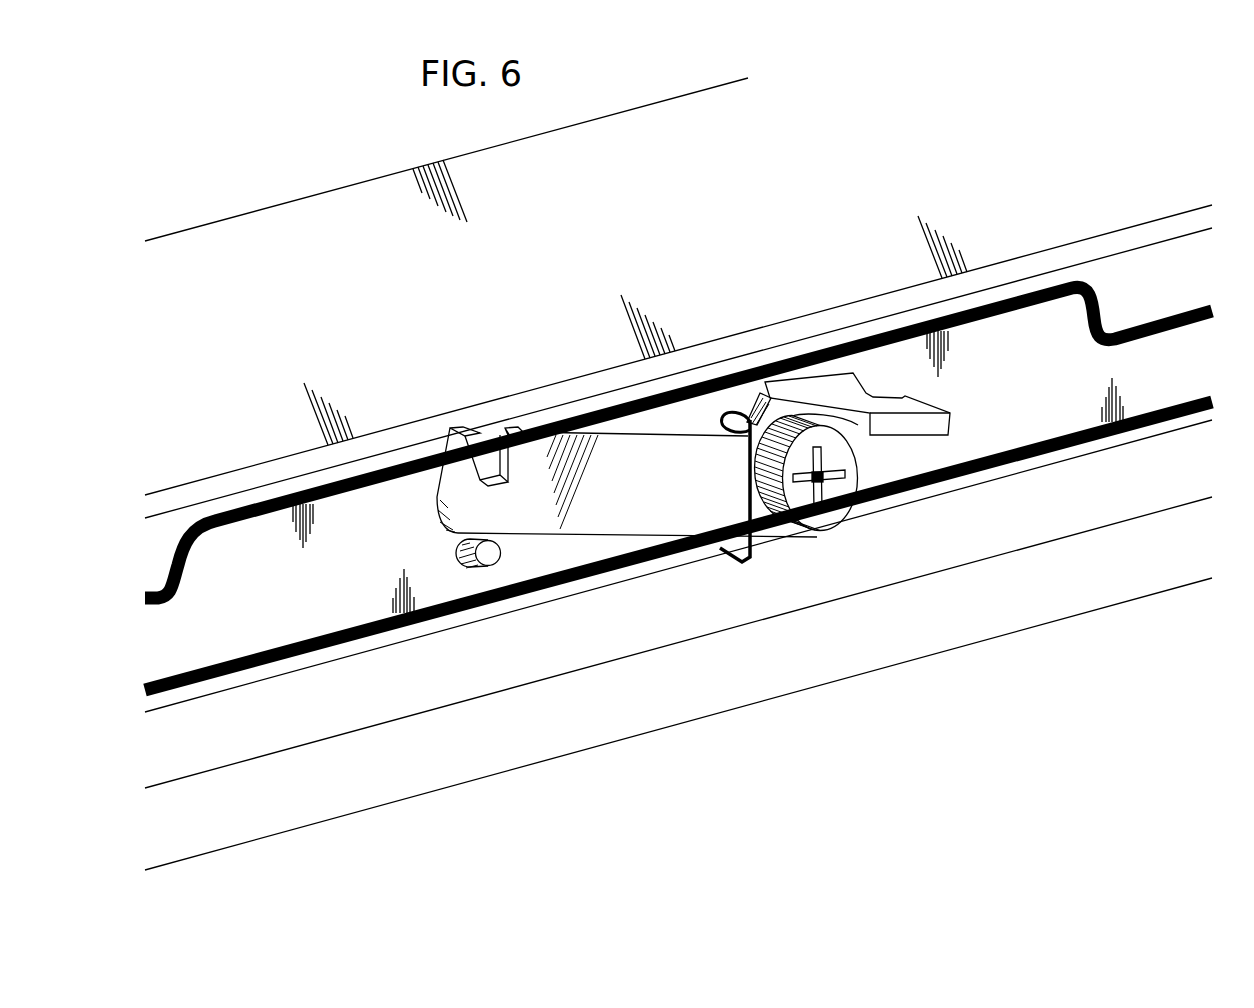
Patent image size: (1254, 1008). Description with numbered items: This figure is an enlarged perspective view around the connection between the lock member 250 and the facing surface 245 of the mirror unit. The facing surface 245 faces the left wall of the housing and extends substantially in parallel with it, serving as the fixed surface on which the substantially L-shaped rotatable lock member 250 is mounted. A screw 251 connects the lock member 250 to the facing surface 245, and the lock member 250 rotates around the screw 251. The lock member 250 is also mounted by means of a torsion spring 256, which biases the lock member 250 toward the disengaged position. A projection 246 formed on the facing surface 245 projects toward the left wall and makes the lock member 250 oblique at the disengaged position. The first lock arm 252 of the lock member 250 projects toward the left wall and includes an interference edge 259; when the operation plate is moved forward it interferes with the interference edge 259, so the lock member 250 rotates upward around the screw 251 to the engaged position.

The facing surface 245 is at (347, 605).
The projection 246 is at (489, 557).
The lock member 250 is at (670, 510).
The screw 251 is at (833, 497).
The first lock arm 252 is at (917, 410).
The torsion spring 256 is at (753, 550).
The interference edge 259 is at (855, 422).